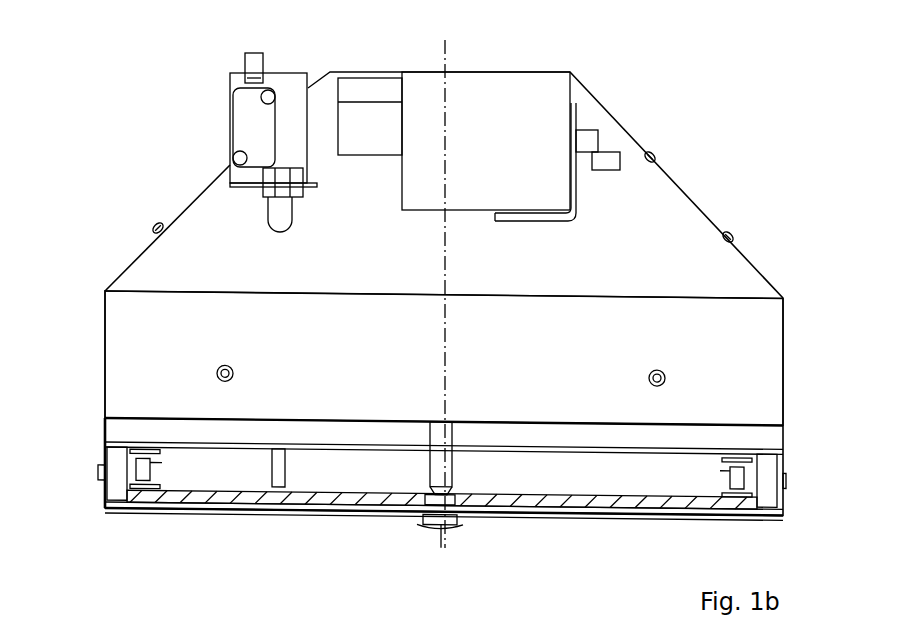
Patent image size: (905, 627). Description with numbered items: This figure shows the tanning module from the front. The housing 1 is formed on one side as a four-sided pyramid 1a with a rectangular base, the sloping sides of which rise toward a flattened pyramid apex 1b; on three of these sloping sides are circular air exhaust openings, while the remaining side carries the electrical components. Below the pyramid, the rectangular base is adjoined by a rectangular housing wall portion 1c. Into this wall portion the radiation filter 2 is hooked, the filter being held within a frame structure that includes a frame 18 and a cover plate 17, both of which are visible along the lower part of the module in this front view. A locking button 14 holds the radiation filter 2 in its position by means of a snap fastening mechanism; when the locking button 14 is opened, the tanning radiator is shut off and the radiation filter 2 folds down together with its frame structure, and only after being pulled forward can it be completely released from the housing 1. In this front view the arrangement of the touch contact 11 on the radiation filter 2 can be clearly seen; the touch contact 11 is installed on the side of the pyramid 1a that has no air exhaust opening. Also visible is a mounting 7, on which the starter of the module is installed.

The housing 1 is at (755, 267).
The four-sided pyramid 1a is at (660, 223).
The flattened pyramid apex 1b is at (375, 72).
The rectangular housing wall portion 1c is at (752, 353).
The radiation filter 2 is at (172, 495).
The mounting 7 is at (572, 193).
The touch contact 11 is at (263, 130).
The locking button 14 is at (430, 530).
The cover plate 17 is at (720, 450).
The frame 18 is at (585, 512).